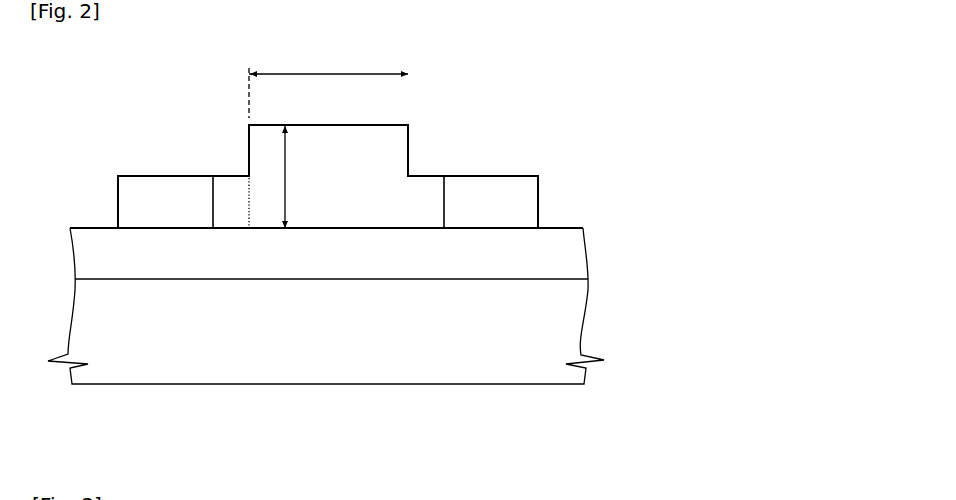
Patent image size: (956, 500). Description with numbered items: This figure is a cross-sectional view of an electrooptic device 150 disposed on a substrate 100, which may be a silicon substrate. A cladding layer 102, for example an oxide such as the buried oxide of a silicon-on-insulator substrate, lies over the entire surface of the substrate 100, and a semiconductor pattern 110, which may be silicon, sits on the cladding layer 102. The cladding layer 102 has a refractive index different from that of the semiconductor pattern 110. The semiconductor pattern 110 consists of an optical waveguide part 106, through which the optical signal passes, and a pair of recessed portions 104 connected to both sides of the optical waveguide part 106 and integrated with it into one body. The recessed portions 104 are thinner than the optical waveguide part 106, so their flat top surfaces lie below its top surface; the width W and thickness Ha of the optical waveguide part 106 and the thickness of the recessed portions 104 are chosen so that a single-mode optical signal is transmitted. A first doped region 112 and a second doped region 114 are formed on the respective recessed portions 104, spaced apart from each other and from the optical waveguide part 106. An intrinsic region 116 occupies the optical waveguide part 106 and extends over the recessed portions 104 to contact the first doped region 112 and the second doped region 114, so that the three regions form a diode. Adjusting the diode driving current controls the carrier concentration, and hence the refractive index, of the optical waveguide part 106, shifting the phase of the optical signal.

The substrate 100 is at (572, 322).
The cladding layer 102 is at (575, 258).
The recessed portions 104 is at (183, 230).
The optical waveguide part 106 is at (323, 230).
The semiconductor pattern 110 is at (329, 357).
The first doped region 112 is at (133, 203).
The second doped region 114 is at (523, 201).
The intrinsic region 116 is at (376, 190).
The electrooptic device 150 is at (328, 129).